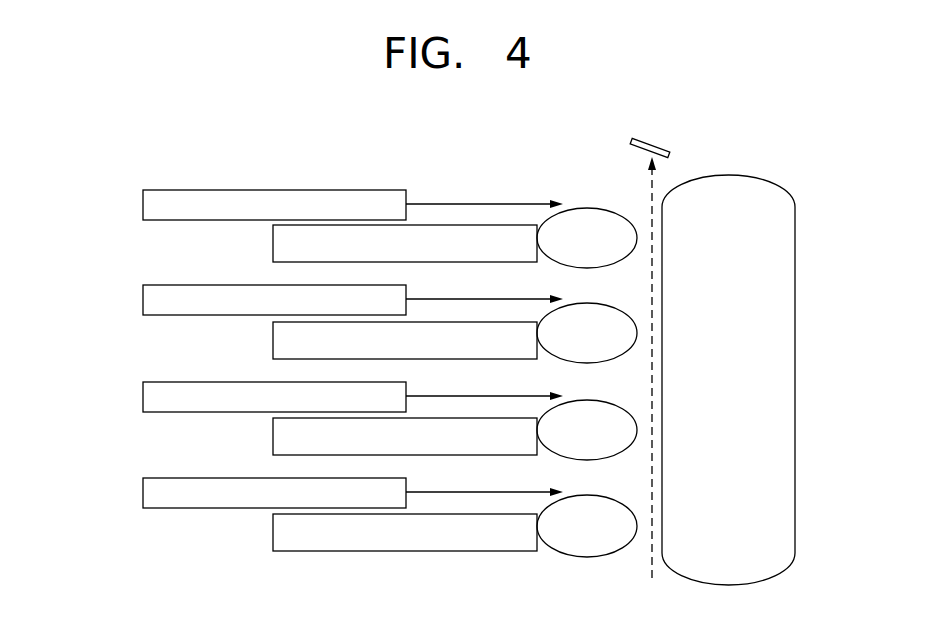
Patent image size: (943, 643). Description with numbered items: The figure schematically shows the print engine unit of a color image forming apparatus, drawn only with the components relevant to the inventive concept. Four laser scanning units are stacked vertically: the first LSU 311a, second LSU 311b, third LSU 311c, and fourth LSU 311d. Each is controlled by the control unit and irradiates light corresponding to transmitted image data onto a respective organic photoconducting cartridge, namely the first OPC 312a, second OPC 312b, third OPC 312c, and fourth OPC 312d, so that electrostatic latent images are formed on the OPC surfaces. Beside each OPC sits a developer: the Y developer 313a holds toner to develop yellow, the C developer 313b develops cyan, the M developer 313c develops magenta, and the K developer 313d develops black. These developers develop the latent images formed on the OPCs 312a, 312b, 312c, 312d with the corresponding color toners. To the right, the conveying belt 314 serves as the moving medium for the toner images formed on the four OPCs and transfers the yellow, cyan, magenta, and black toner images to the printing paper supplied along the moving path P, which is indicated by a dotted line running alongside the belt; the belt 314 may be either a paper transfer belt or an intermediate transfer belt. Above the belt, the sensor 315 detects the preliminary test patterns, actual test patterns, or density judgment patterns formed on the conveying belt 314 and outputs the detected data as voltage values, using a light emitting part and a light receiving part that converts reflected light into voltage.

The first laser scanning unit 311a is at (143, 191).
The second laser scanning unit 311b is at (143, 286).
The third laser scanning unit 311c is at (143, 383).
The fourth laser scanning unit 311d is at (143, 479).
The first organic photoconducting cartridge 312a is at (585, 208).
The second organic photoconducting cartridge 312b is at (585, 303).
The third organic photoconducting cartridge 312c is at (585, 400).
The fourth organic photoconducting cartridge 312d is at (585, 495).
The Y developer 313a is at (273, 239).
The C developer 313b is at (273, 335).
The M developer 313c is at (273, 431).
The K developer 313d is at (273, 528).
The conveying belt 314 is at (776, 188).
The sensor 315 is at (660, 145).
The printing paper moving path P is at (651, 562).